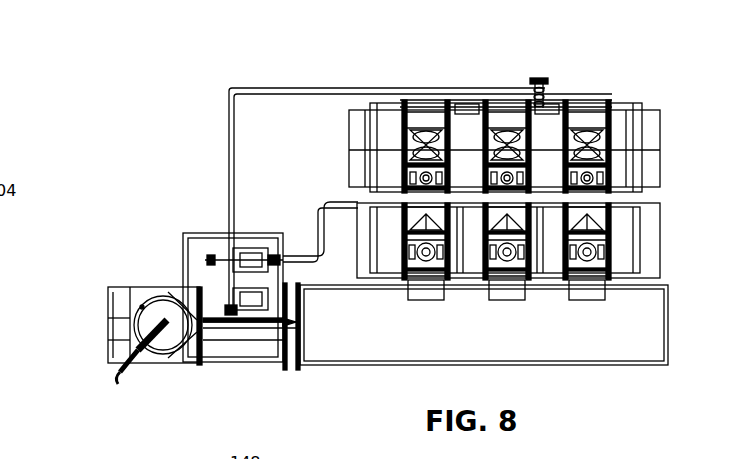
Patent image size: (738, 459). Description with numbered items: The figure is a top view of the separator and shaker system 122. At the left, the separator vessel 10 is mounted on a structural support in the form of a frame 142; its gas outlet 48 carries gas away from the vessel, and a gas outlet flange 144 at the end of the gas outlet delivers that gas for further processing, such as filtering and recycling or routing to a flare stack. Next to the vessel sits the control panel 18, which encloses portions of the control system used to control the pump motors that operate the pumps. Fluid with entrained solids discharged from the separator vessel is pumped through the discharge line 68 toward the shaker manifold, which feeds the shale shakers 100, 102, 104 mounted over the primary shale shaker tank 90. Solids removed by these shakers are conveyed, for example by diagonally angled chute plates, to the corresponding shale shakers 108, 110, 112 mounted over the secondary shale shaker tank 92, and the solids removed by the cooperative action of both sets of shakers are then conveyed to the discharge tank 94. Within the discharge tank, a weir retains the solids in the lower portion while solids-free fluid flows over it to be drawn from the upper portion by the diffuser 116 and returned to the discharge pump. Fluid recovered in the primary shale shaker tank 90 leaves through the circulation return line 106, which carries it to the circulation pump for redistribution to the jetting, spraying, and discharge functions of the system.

The separator vessel 10 is at (178, 292).
The control panel 18 is at (260, 358).
The gas outlet 48 is at (148, 352).
The discharge line 68 is at (228, 127).
The primary shale shaker tank 90 is at (660, 148).
The secondary shale shaker tank 92 is at (663, 246).
The discharge tank 94 is at (668, 318).
The shale shaker 100 is at (457, 140).
The shale shaker 102 is at (532, 142).
The shale shaker 104 is at (614, 150).
The circulation return line 106 is at (318, 230).
The shale shaker 108 is at (452, 256).
The shale shaker 110 is at (531, 257).
The shale shaker 112 is at (614, 233).
The diffuser 116 is at (287, 372).
The system 122 is at (462, 46).
The frame 142 is at (197, 367).
The gas outlet flange 144 is at (115, 382).